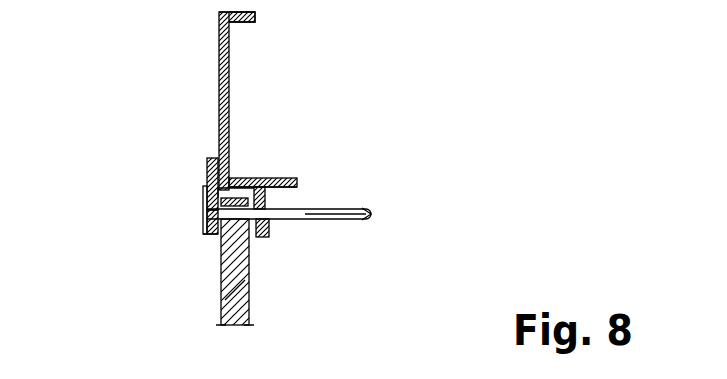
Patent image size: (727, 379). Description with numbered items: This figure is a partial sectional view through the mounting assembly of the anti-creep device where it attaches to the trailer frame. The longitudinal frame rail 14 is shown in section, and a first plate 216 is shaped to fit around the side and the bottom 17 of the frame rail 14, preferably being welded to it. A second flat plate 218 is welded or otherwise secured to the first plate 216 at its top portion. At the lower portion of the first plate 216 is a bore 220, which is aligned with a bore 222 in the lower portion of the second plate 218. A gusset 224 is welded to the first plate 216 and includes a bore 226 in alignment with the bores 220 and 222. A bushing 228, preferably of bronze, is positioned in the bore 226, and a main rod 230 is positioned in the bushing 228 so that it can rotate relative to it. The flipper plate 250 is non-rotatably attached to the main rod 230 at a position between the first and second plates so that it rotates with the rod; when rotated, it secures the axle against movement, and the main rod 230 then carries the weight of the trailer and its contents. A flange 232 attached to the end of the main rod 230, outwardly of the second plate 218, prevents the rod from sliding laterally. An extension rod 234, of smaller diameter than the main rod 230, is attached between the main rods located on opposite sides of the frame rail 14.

The frame rail 14 is at (218, 71).
The bottom of frame rail 17 is at (263, 178).
The first plate 216 is at (288, 178).
The second flat plate 218 is at (205, 166).
The bore 220 is at (210, 236).
The bore 222 is at (207, 232).
The gusset 224 is at (270, 237).
The bore 226 is at (272, 196).
The bushing 228 is at (275, 224).
The main rod 230 is at (372, 208).
The flange 232 is at (203, 210).
The extension rod 234 is at (224, 284).
The flipper plate 250 is at (233, 291).